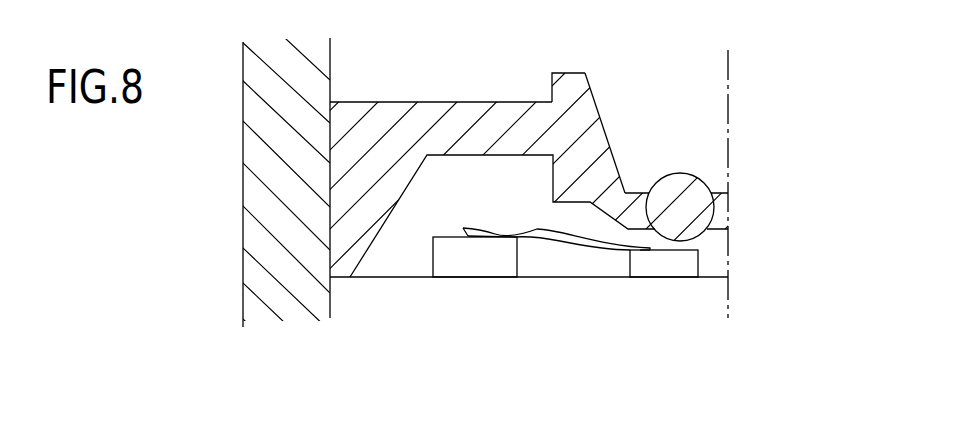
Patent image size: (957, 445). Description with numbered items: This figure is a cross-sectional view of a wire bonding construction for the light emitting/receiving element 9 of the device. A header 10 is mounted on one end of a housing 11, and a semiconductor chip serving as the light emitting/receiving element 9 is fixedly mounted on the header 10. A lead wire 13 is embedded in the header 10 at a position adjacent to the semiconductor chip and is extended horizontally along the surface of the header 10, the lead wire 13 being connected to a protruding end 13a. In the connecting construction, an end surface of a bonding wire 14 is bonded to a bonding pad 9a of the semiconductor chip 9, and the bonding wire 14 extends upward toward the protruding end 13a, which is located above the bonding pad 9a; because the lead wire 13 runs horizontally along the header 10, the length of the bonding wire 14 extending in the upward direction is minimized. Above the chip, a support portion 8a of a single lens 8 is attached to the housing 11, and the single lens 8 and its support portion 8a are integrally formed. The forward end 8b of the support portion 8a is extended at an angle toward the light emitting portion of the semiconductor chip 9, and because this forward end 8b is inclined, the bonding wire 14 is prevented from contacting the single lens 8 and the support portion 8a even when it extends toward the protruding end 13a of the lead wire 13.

The single lens 8 is at (691, 188).
The support portion 8a is at (515, 101).
The forward end 8b is at (612, 203).
The light emitting/receiving element 9 is at (692, 263).
The bonding pad 9a is at (640, 252).
The header 10 is at (718, 299).
The housing 11 is at (250, 230).
The lead wire 13 is at (442, 281).
The protruding end 13a is at (454, 237).
The bonding wire 14 is at (583, 250).